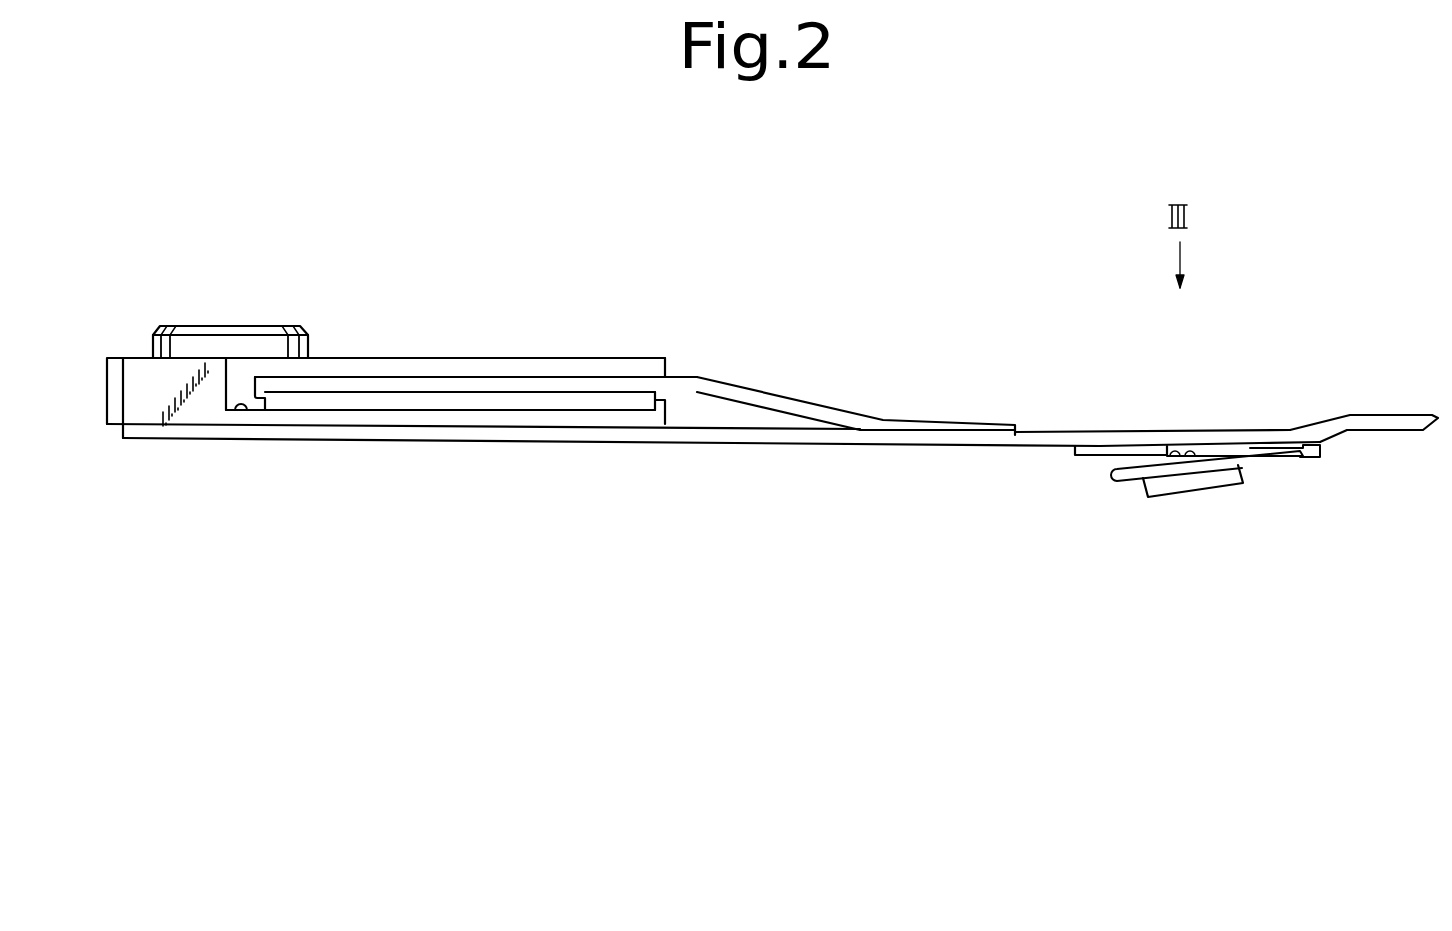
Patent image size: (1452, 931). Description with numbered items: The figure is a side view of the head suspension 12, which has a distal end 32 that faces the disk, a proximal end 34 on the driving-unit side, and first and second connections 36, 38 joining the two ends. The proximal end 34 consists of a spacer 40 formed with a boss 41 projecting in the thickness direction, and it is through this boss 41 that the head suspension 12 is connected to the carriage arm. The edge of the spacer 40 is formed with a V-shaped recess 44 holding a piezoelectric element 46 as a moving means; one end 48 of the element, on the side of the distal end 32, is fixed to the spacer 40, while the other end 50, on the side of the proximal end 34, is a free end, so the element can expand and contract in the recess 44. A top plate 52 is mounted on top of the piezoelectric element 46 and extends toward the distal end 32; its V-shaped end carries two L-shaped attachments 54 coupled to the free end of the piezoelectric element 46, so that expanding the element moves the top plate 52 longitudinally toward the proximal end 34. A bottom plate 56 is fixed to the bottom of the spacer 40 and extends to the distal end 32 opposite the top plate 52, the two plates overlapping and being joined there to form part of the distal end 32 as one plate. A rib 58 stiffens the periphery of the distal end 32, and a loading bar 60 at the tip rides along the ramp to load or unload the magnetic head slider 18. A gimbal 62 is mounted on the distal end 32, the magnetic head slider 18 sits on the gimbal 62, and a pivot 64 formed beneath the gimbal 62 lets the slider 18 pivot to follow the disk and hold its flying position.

The head suspension 12 is at (707, 235).
The magnetic head slider 18 is at (1190, 485).
The distal end 32 is at (1148, 412).
The proximal end 34 is at (294, 318).
The first connection 36 is at (759, 443).
The second connection 38 is at (775, 383).
The spacer 40 is at (137, 387).
The boss 41 is at (178, 345).
The V-shaped recess 44 is at (238, 412).
The piezoelectric element 46 is at (385, 400).
The one end of the piezoelectric element 48 is at (645, 402).
The other end of the piezoelectric element 50 is at (282, 402).
The top plate 52 is at (677, 383).
The L-shaped attachment 54 is at (262, 378).
The bottom plate 56 is at (697, 430).
The rib 58 is at (1210, 437).
The loading bar 60 is at (1392, 425).
The gimbal 62 is at (1308, 462).
The pivot 64 is at (1172, 450).